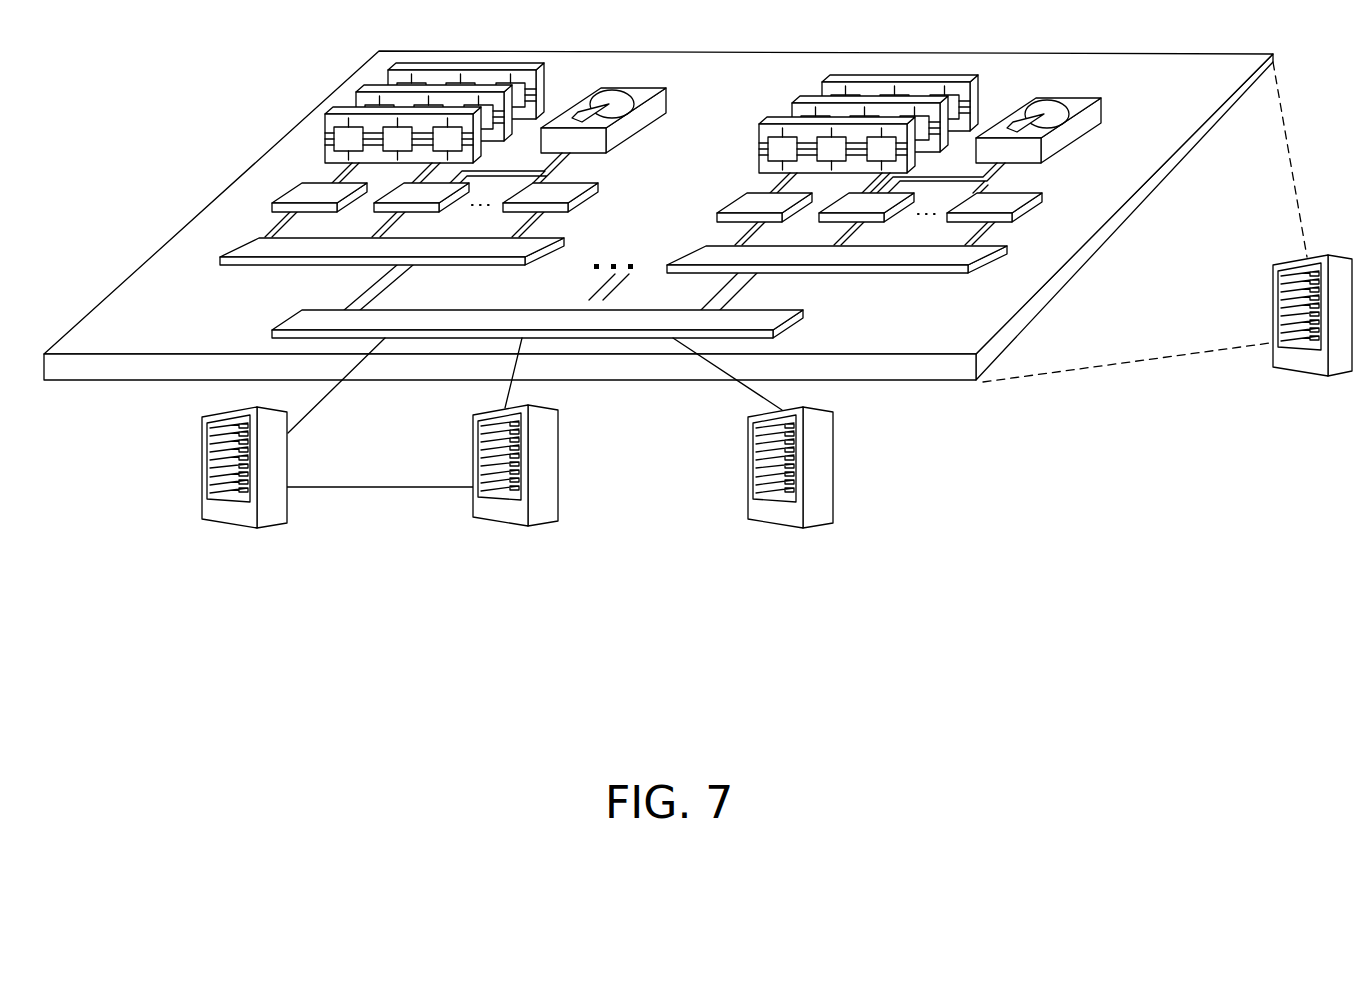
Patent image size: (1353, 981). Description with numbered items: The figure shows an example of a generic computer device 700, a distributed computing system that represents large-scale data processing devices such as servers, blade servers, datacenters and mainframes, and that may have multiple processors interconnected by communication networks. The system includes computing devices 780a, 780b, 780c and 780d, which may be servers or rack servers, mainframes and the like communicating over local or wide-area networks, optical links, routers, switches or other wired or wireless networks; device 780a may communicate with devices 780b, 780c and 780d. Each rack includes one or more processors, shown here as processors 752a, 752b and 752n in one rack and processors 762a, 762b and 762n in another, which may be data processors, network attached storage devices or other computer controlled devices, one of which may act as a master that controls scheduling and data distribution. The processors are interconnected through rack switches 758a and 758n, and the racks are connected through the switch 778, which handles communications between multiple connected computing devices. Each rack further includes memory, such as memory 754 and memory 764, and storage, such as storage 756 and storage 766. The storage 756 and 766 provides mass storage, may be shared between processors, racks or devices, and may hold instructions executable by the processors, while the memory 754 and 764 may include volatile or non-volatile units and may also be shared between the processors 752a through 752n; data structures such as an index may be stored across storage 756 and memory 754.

The generic computer device 700 is at (210, 72).
The memory 754 is at (471, 68).
The storage 756 is at (633, 82).
The processor 752a is at (313, 192).
The processor 752b is at (410, 193).
The processor 752n is at (567, 197).
The rack switch 758a is at (260, 246).
The rack switch 758n is at (950, 253).
The memory 764 is at (906, 74).
The storage 766 is at (1067, 95).
The processor 762a is at (764, 203).
The processor 762b is at (860, 208).
The processor 762n is at (998, 203).
The switch 778 is at (303, 323).
The computing device 780a is at (1273, 283).
The computing device 780b is at (202, 467).
The computing device 780c is at (473, 462).
The computing device 780d is at (748, 466).